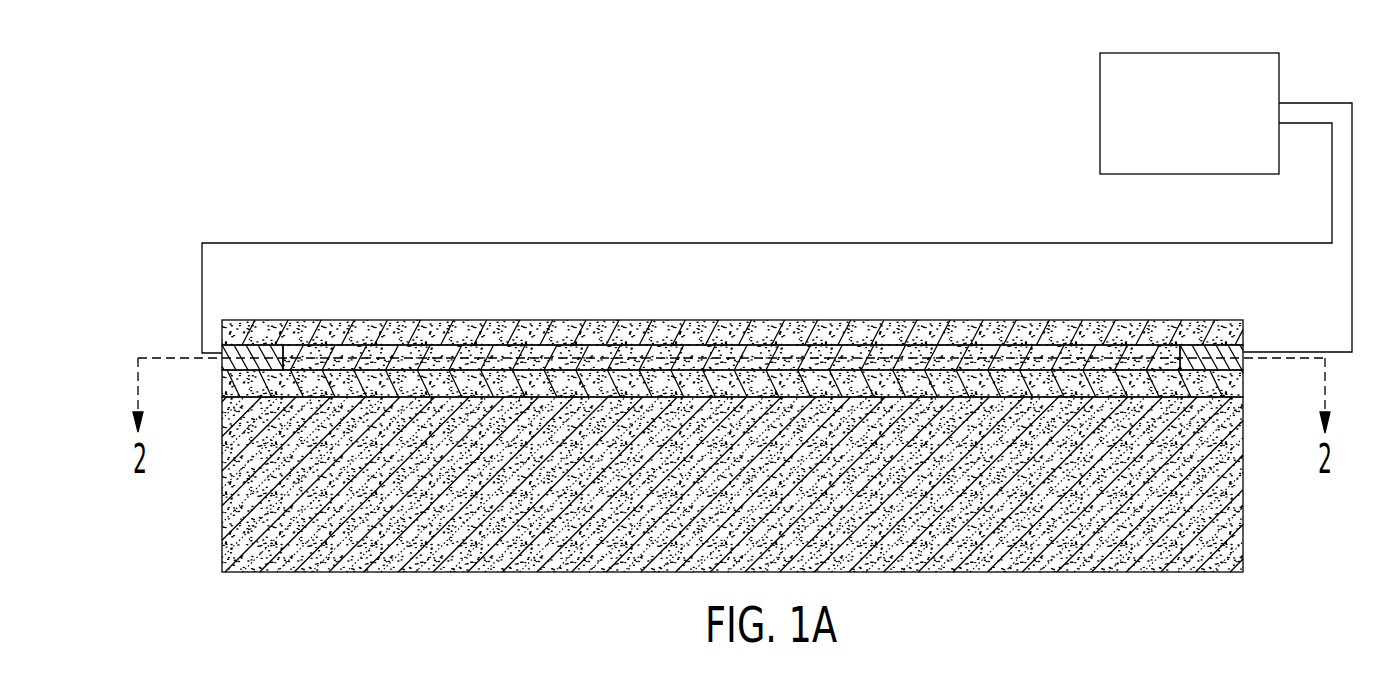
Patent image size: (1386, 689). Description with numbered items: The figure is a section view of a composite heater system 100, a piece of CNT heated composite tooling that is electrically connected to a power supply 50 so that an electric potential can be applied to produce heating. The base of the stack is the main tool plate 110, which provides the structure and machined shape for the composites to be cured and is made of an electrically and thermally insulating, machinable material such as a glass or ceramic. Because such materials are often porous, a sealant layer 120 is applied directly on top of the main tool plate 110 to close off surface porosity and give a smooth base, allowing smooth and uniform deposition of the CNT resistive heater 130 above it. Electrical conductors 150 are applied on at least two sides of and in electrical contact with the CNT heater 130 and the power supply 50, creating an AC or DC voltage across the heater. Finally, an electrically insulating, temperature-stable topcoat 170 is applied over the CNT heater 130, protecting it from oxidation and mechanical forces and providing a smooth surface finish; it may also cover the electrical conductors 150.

The composite heater system 100 is at (154, 120).
The power supply 50 is at (1311, 67).
The topcoat 170 is at (735, 332).
The CNT resistive heater 130 is at (1013, 350).
The electrical conductor 150 is at (228, 348).
The sealant layer 120 is at (232, 385).
The main tool plate 110 is at (1232, 520).